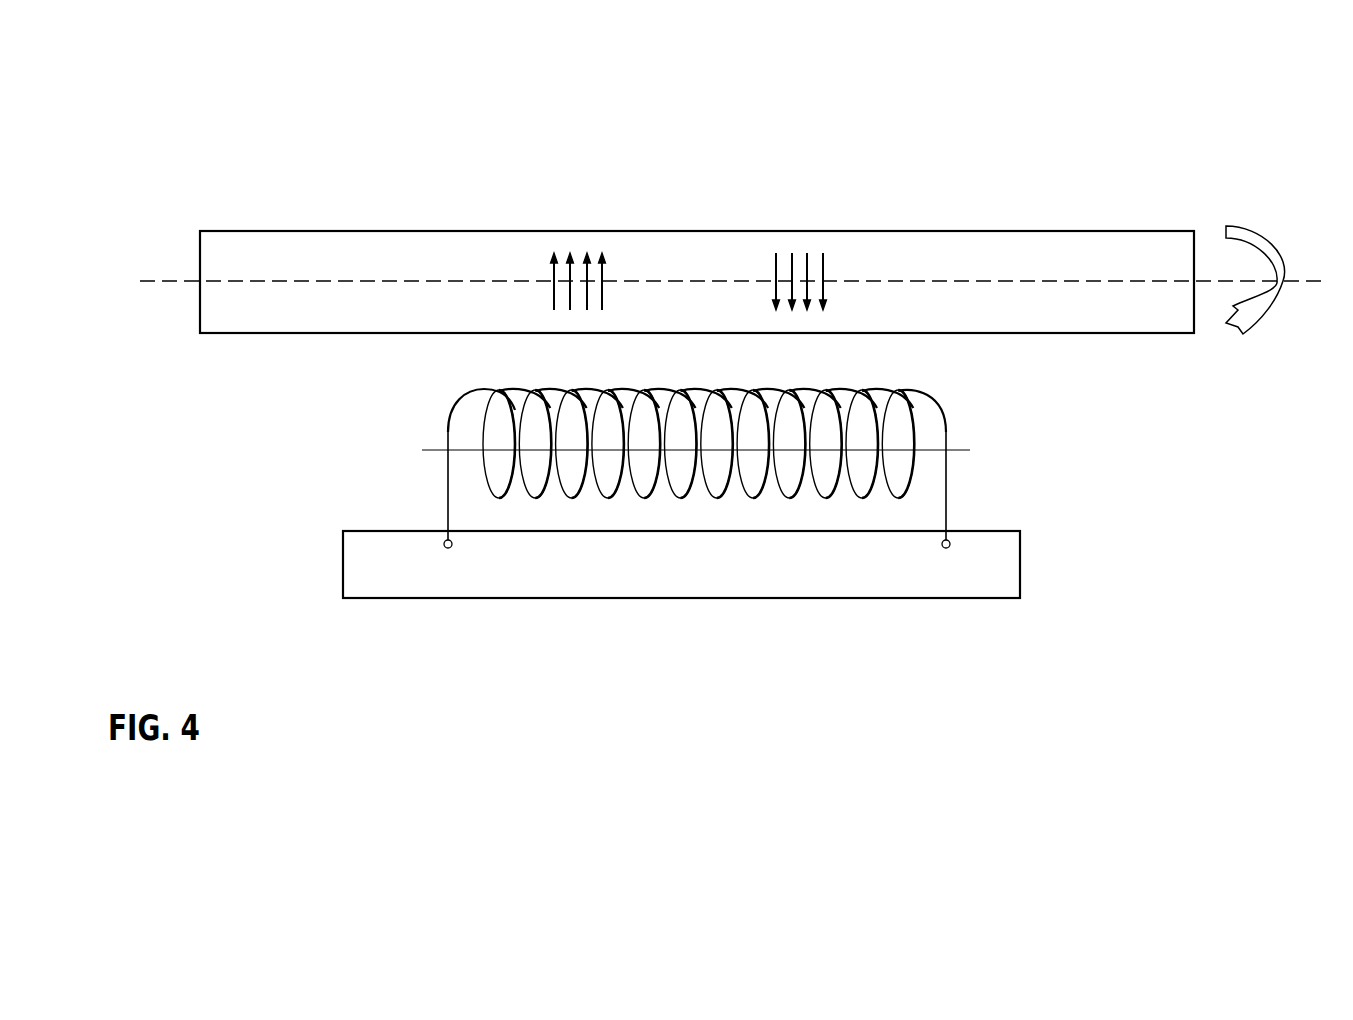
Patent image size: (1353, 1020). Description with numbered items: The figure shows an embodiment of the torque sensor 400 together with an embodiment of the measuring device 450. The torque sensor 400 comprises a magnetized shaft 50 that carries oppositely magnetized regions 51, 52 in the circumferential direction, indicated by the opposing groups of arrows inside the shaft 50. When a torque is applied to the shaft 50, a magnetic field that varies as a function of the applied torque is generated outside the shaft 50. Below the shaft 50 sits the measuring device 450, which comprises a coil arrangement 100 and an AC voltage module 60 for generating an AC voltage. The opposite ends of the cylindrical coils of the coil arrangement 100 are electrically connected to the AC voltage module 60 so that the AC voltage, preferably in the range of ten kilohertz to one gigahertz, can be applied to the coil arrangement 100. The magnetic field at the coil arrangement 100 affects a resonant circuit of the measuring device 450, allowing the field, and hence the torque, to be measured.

The torque sensor 400 is at (272, 128).
The magnetized shaft 50 is at (962, 245).
The magnetized region 51 is at (582, 242).
The magnetized region 52 is at (793, 242).
The coil arrangement 100 is at (346, 442).
The AC voltage module 60 is at (995, 560).
The measuring device 450 is at (1152, 594).